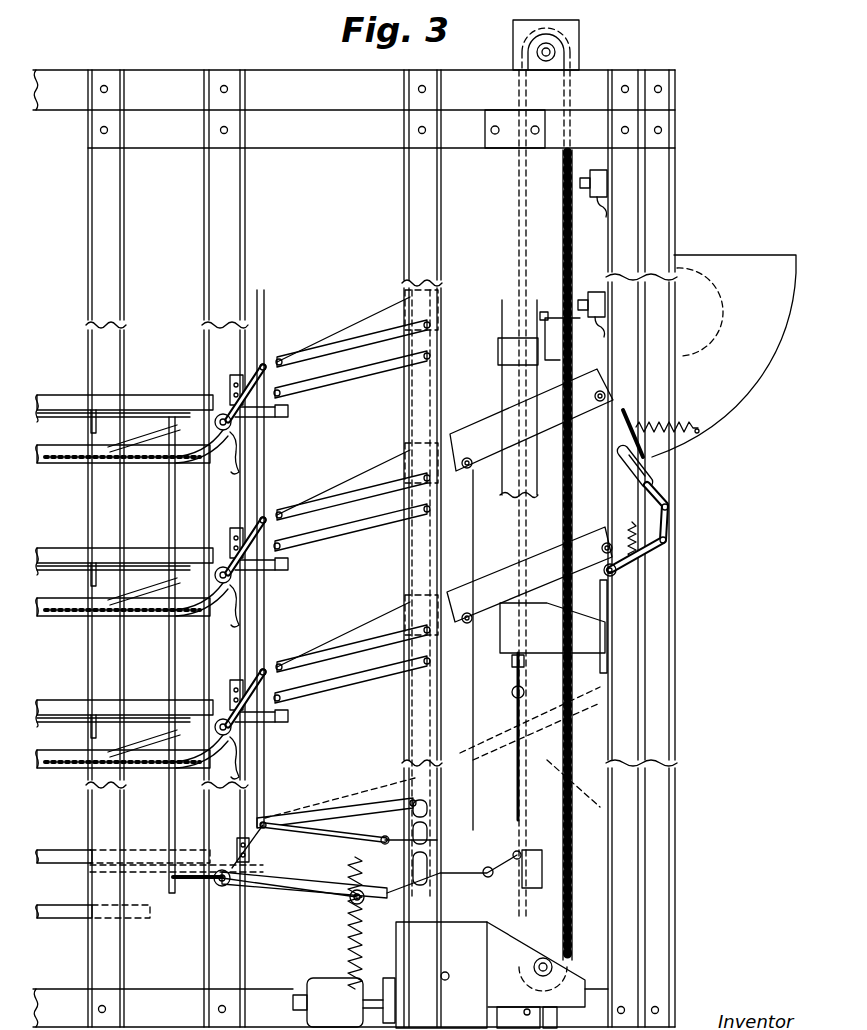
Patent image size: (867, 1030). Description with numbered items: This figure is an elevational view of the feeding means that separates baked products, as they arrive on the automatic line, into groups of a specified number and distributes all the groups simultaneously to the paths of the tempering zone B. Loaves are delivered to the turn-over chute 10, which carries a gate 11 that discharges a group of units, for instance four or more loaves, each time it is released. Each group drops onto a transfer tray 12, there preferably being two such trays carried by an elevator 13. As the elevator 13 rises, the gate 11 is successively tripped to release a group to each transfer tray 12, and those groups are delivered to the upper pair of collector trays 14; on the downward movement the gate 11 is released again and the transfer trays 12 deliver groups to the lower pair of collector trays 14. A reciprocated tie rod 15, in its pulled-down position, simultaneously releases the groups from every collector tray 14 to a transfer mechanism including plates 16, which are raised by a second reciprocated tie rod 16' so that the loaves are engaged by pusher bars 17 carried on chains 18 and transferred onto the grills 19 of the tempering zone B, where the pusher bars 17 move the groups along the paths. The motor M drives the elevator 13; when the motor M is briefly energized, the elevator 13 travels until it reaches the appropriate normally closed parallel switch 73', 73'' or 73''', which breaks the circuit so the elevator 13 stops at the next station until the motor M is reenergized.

The tempering zone B is at (355, 523).
The turn-over chute 10 is at (724, 356).
The gate 11 is at (661, 475).
The transfer tray 12 is at (530, 599).
The elevator 13 is at (503, 399).
The collector tray 14 is at (336, 587).
The tie rod 15 is at (316, 878).
The plate 16 is at (181, 616).
The tie rod 16' is at (152, 655).
The pusher bar 17 is at (226, 668).
The chain 18 is at (122, 671).
The grill 19 is at (124, 618).
The normally closed switch 73' is at (592, 196).
The normally closed switch 73'' is at (585, 326).
The normally closed switch 73''' is at (635, 474).
The motor M is at (344, 1002).